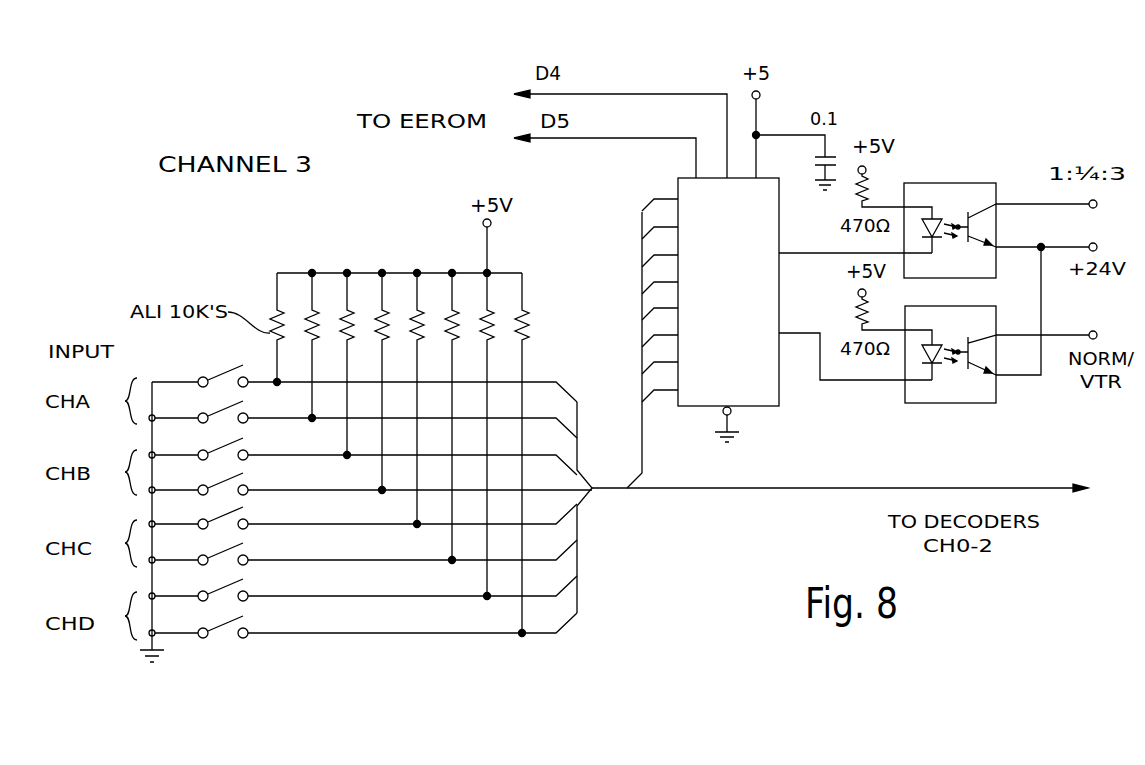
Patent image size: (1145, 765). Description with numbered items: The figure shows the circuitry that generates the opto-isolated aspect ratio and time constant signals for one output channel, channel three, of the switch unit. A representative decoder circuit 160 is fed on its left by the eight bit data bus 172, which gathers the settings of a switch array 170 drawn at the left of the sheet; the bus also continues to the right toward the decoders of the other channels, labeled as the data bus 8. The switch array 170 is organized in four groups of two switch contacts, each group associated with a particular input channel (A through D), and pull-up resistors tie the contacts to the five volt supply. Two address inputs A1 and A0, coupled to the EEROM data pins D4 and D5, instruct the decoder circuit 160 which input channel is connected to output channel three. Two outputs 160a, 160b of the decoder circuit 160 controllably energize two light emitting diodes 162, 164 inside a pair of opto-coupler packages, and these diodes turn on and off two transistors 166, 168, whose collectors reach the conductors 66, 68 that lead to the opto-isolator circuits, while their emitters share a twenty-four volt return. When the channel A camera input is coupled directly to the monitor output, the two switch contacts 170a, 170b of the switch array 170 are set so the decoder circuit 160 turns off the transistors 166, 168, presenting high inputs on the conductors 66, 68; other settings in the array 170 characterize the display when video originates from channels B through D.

The data bus 8 is at (832, 480).
The conductor 66 is at (1067, 206).
The conductor 68 is at (1058, 335).
The decoder circuit 160 is at (770, 398).
The decoder output 160a is at (800, 256).
The decoder output 160b is at (852, 382).
The light emitting diode 162 is at (941, 222).
The light emitting diode 164 is at (940, 352).
The transistor 166 is at (988, 234).
The transistor 168 is at (990, 362).
The switch array 170 is at (202, 519).
The switch contact 170a is at (232, 375).
The switch contact 170b is at (220, 410).
The eight bit data bus 172 is at (683, 490).